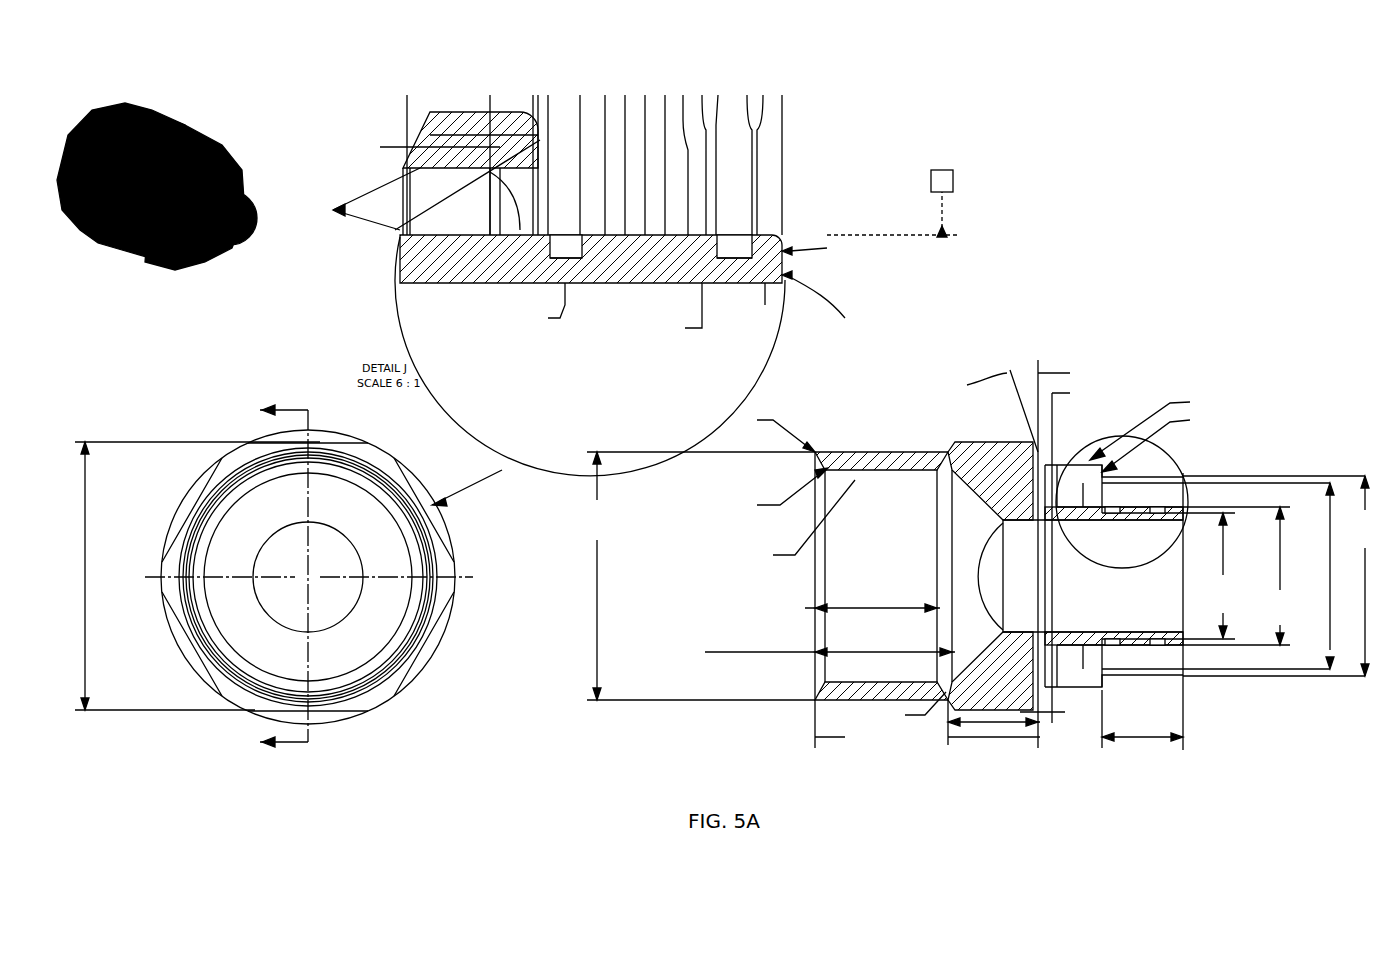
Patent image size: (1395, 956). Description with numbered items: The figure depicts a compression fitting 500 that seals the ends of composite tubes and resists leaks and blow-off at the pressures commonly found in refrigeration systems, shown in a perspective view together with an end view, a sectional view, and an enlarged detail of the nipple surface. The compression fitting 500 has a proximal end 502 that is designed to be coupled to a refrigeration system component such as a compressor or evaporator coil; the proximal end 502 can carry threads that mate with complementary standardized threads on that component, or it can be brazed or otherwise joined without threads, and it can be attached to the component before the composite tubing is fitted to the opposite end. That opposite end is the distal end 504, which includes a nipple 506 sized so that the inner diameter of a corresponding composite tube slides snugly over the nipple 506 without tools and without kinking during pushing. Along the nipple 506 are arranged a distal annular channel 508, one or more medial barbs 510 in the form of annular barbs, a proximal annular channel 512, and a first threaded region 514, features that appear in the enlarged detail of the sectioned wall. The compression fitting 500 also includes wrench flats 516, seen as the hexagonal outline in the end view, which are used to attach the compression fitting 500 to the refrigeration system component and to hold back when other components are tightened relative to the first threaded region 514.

The compression fitting 500 is at (1381, 830).
The proximal end 502 is at (63, 213).
The distal end 504 is at (220, 272).
The nipple 506 is at (200, 267).
The distal annular channel 508 is at (740, 283).
The medial barbs 510 is at (682, 93).
The proximal annular channel 512 is at (560, 262).
The first threaded region 514 is at (475, 112).
The wrench flats 516 is at (432, 630).